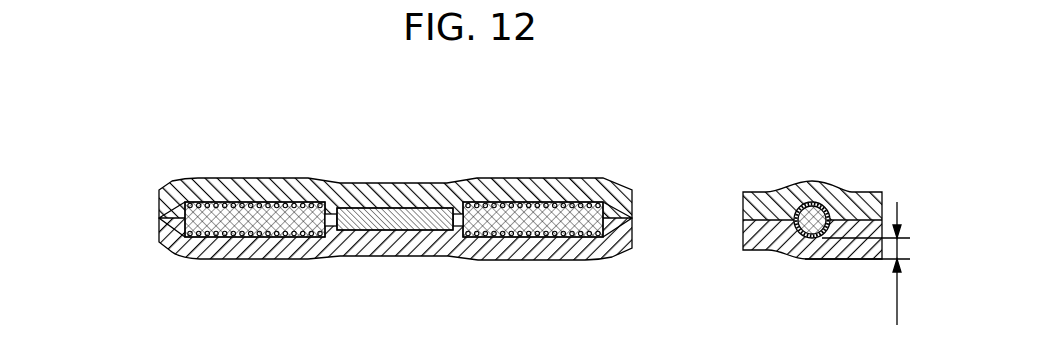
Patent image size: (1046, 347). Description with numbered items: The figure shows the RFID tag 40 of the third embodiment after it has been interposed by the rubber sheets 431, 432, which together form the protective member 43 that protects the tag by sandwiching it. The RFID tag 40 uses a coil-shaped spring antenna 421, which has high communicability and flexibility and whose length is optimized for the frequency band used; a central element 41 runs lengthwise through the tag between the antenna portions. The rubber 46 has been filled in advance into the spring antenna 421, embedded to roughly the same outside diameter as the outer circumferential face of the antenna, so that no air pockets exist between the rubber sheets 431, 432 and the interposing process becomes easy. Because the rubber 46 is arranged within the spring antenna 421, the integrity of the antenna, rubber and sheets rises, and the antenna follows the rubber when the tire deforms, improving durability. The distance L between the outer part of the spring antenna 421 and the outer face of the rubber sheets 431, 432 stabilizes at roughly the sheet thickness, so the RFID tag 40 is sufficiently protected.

The RFID tag 40 is at (612, 138).
The center conductor 41 is at (410, 217).
The spring antenna 421 is at (311, 203).
The protective member 43 is at (68, 177).
The rubber sheet 431 is at (157, 243).
The rubber sheet 432 is at (157, 204).
The rubber 46 is at (228, 228).